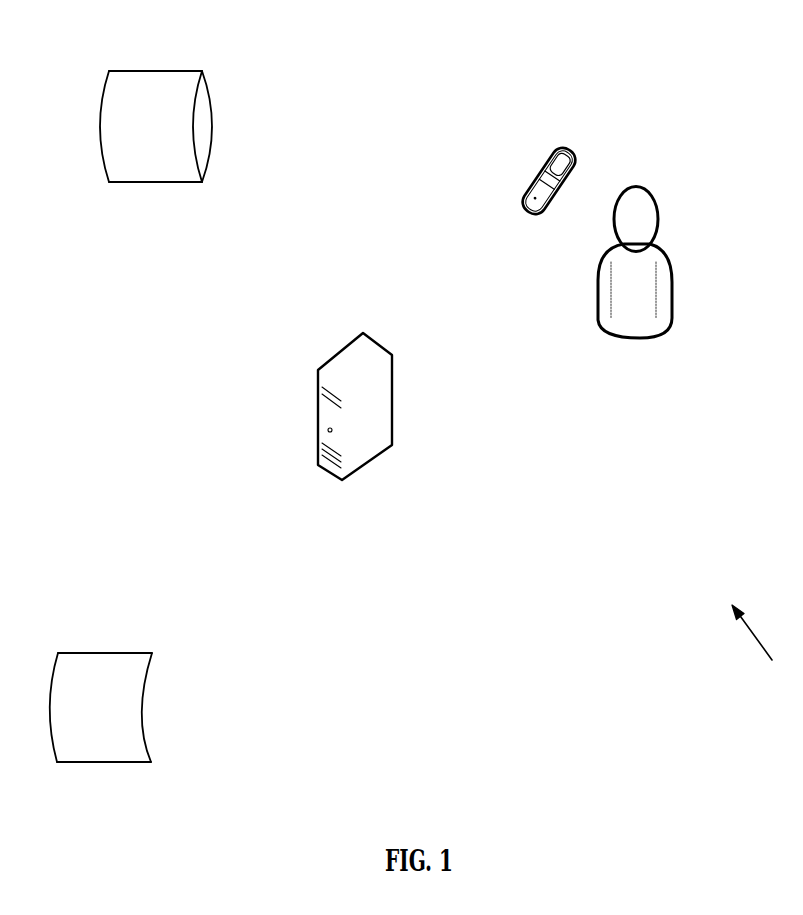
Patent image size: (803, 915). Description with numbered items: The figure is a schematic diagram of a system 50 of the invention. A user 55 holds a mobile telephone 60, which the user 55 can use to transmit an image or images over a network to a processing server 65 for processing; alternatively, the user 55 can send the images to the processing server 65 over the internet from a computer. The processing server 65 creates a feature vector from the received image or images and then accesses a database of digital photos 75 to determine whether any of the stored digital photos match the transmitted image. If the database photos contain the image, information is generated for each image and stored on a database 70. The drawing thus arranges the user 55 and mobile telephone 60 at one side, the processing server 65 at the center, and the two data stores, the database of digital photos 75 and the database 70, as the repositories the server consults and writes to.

The system 50 is at (760, 646).
The user 55 is at (663, 250).
The mobile device 60 is at (573, 145).
The processing server 65 is at (393, 442).
The database 70 is at (143, 723).
The database of digital photos 75 is at (208, 86).